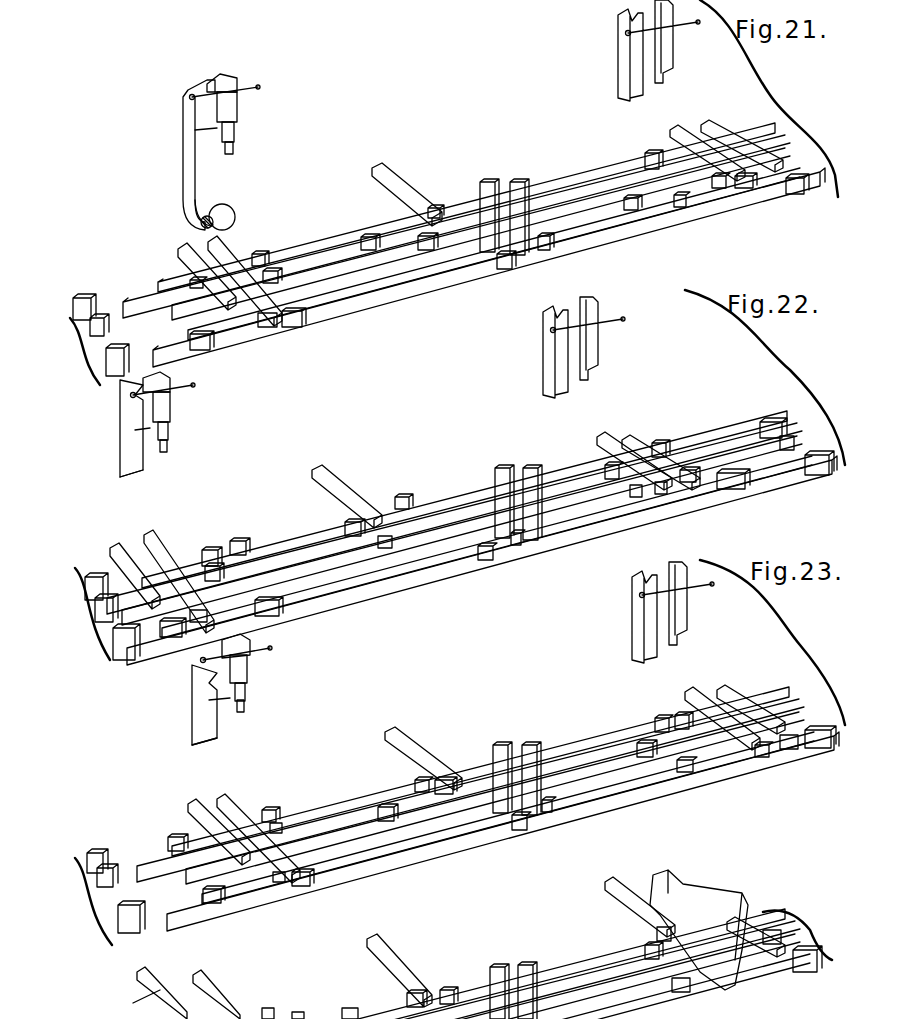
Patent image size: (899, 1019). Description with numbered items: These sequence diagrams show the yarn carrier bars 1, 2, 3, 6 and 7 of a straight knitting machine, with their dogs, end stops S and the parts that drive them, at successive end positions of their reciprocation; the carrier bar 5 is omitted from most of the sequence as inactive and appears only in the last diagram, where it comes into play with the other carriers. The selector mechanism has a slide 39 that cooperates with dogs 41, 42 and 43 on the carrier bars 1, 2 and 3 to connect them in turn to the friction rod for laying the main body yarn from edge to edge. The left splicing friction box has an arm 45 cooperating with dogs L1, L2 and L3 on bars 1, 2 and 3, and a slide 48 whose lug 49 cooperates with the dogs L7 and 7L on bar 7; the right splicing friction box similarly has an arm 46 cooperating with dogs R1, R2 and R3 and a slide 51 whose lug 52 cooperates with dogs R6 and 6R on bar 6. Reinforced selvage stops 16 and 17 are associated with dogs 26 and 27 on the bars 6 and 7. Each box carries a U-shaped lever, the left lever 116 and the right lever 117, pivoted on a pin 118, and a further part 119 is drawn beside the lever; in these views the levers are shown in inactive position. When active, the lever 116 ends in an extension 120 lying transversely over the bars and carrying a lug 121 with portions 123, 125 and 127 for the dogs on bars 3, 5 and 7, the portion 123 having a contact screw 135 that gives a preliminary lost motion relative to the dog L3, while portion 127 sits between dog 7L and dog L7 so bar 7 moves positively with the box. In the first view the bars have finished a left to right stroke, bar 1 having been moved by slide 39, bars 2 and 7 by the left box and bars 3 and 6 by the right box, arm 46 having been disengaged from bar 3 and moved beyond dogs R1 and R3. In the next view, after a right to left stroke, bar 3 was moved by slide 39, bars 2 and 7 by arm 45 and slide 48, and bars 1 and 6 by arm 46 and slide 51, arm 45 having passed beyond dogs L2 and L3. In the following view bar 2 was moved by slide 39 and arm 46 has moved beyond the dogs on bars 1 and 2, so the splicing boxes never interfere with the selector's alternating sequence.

In FIG. 21, the yarn-carrier bar 1 is at (550, 200).
In FIG. 22, the yarn-carrier bar 1 is at (464, 499).
In FIG. 23, the yarn-carrier bar 1 is at (480, 771).
In FIG. 24, the yarn-carrier bar 1 is at (476, 964).
In FIG. 21, the yarn-carrier bar 2 is at (557, 197).
In FIG. 22, the yarn-carrier bar 2 is at (452, 518).
In FIG. 23, the yarn-carrier bar 2 is at (468, 790).
In FIG. 24, the yarn-carrier bar 2 is at (464, 970).
In FIG. 21, the yarn-carrier bar 3 is at (572, 203).
In FIG. 22, the yarn-carrier bar 3 is at (462, 525).
In FIG. 23, the yarn-carrier bar 3 is at (495, 795).
In FIG. 24, the yarn-carrier bar 3 is at (491, 974).
In FIG. 22, the yarn-carrier bar 5 is at (487, 547).
In FIG. 21, the yarn-carrier bar 6 is at (572, 232).
In FIG. 22, the yarn-carrier bar 6 is at (487, 551).
In FIG. 23, the yarn-carrier bar 6 is at (508, 818).
In FIG. 24, the yarn-carrier bar 6 is at (504, 986).
In FIG. 21, the yarn-carrier bar 7 is at (603, 228).
In FIG. 22, the yarn-carrier bar 7 is at (482, 560).
In FIG. 23, the yarn-carrier bar 7 is at (503, 831).
In FIG. 21, the reinforced selvage stop 16 is at (493, 182).
In FIG. 22, the reinforced selvage stop 16 is at (497, 468).
In FIG. 23, the reinforced selvage stop 16 is at (497, 745).
In FIG. 24, the reinforced selvage stop 16 is at (497, 967).
In FIG. 21, the reinforced selvage stop 17 is at (520, 182).
In FIG. 22, the reinforced selvage stop 17 is at (527, 468).
In FIG. 23, the reinforced selvage stop 17 is at (530, 745).
In FIG. 24, the reinforced selvage stop 17 is at (528, 965).
In FIG. 21, the dog 26 is at (540, 250).
In FIG. 22, the dog 26 is at (517, 545).
In FIG. 23, the dog 26 is at (547, 812).
In FIG. 21, the dog 27 is at (506, 269).
In FIG. 22, the dog 27 is at (486, 560).
In FIG. 23, the dog 27 is at (518, 830).
In FIG. 21, the slide 39 is at (400, 182).
In FIG. 22, the slide 39 is at (335, 482).
In FIG. 23, the slide 39 is at (415, 742).
In FIG. 24, the slide 39 is at (400, 960).
In FIG. 21, the dog 41 is at (435, 208).
In FIG. 22, the dog 41 is at (400, 497).
In FIG. 23, the dog 41 is at (418, 780).
In FIG. 24, the dog 41 is at (455, 985).
In FIG. 21, the dog 42 is at (363, 237).
In FIG. 22, the dog 42 is at (345, 525).
In FIG. 23, the dog 42 is at (446, 795).
In FIG. 24, the dog 42 is at (407, 1000).
In FIG. 21, the dog 43 is at (425, 250).
In FIG. 22, the dog 43 is at (385, 548).
In FIG. 23, the dog 43 is at (388, 821).
In FIG. 24, the dog 43 is at (349, 1010).
In FIG. 21, the arm 45 is at (187, 246).
In FIG. 22, the arm 45 is at (116, 548).
In FIG. 23, the arm 45 is at (198, 804).
In FIG. 21, the arm 46 is at (733, 133).
In FIG. 22, the arm 46 is at (640, 438).
In FIG. 23, the arm 46 is at (742, 690).
In FIG. 24, the arm 46 is at (742, 925).
In FIG. 21, the slide 48 is at (225, 248).
In FIG. 22, the slide 48 is at (153, 535).
In FIG. 23, the slide 48 is at (240, 800).
In FIG. 24, the slide 48 is at (178, 975).
In FIG. 21, the lug 49 is at (268, 327).
In FIG. 22, the lug 49 is at (200, 610).
In FIG. 23, the lug 49 is at (278, 882).
In FIG. 21, the slide 51 is at (688, 128).
In FIG. 22, the slide 51 is at (612, 438).
In FIG. 23, the slide 51 is at (710, 692).
In FIG. 24, the slide 51 is at (612, 884).
In FIG. 21, the lug 52 is at (748, 188).
In FIG. 22, the lug 52 is at (688, 482).
In FIG. 23, the lug 52 is at (760, 757).
In FIG. 24, the lug 52 is at (657, 932).
In FIG. 21, the lever 116 is at (188, 170).
In FIG. 22, the lever 116 is at (125, 440).
In FIG. 23, the lever 116 is at (200, 742).
In FIG. 24, the lever 116 is at (131, 1002).
In FIG. 21, the lever 117 is at (620, 70).
In FIG. 22, the lever 117 is at (548, 375).
In FIG. 23, the lever 117 is at (635, 638).
In FIG. 24, the lever 117 is at (695, 888).
In FIG. 21, the pin 118 is at (263, 180).
In FIG. 21, the plate 119 is at (188, 107).
In FIG. 22, the plate 119 is at (130, 400).
In FIG. 23, the plate 119 is at (200, 680).
In FIG. 24, the plate 119 is at (237, 1012).
In FIG. 21, the extension 120 is at (215, 77).
In FIG. 22, the extension 120 is at (145, 380).
In FIG. 23, the extension 120 is at (245, 642).
In FIG. 21, the lug 121 is at (227, 85).
In FIG. 22, the lug 121 is at (170, 395).
In FIG. 23, the lug 121 is at (247, 665).
In FIG. 21, the portion 123 is at (228, 142).
In FIG. 22, the portion 123 is at (166, 447).
In FIG. 23, the portion 123 is at (243, 712).
In FIG. 21, the portion 125 is at (232, 117).
In FIG. 22, the portion 125 is at (168, 428).
In FIG. 23, the portion 125 is at (245, 690).
In FIG. 21, the portion 127 is at (230, 107).
In FIG. 22, the portion 127 is at (170, 410).
In FIG. 23, the portion 127 is at (247, 680).
In FIG. 21, the contact screw 135 is at (212, 135).
In FIG. 22, the contact screw 135 is at (138, 432).
In FIG. 23, the contact screw 135 is at (215, 702).
In FIG. 21, the dog L1 is at (261, 253).
In FIG. 22, the dog L1 is at (248, 533).
In FIG. 23, the dog L1 is at (272, 805).
In FIG. 24, the dog L1 is at (263, 1009).
In FIG. 21, the dog L2 is at (190, 280).
In FIG. 22, the dog L2 is at (207, 566).
In FIG. 23, the dog L2 is at (278, 823).
In FIG. 24, the dog L2 is at (296, 1012).
In FIG. 21, the dog L3 is at (278, 270).
In FIG. 22, the dog L3 is at (210, 550).
In FIG. 23, the dog L3 is at (175, 837).
In FIG. 21, the dog L7 is at (205, 350).
In FIG. 22, the dog L7 is at (172, 637).
In FIG. 23, the dog L7 is at (215, 903).
In FIG. 21, the dog 7L is at (293, 327).
In FIG. 22, the dog 7L is at (280, 612).
In FIG. 23, the dog 7L is at (300, 886).
In FIG. 21, the dog R1 is at (652, 152).
In FIG. 22, the dog R1 is at (660, 443).
In FIG. 23, the dog R1 is at (662, 718).
In FIG. 24, the dog R1 is at (645, 950).
In FIG. 21, the dog R2 is at (632, 210).
In FIG. 22, the dog R2 is at (608, 480).
In FIG. 23, the dog R2 is at (682, 715).
In FIG. 24, the dog R2 is at (695, 990).
In FIG. 21, the dog R3 is at (715, 188).
In FIG. 22, the dog R3 is at (636, 497).
In FIG. 23, the dog R3 is at (645, 757).
In FIG. 21, the dog R6 is at (680, 207).
In FIG. 22, the dog R6 is at (662, 494).
In FIG. 23, the dog R6 is at (683, 772).
In FIG. 21, the dog 6R is at (798, 186).
In FIG. 22, the dog 6R is at (735, 489).
In FIG. 23, the dog 6R is at (785, 750).
In FIG. 24, the dog 6R is at (772, 975).
In FIG. 21, the carrier bar end stop S is at (445, 289).
In FIG. 22, the carrier bar end stop S is at (803, 482).
In FIG. 23, the carrier bar end stop S is at (820, 748).
In FIG. 24, the carrier bar end stop S is at (790, 925).